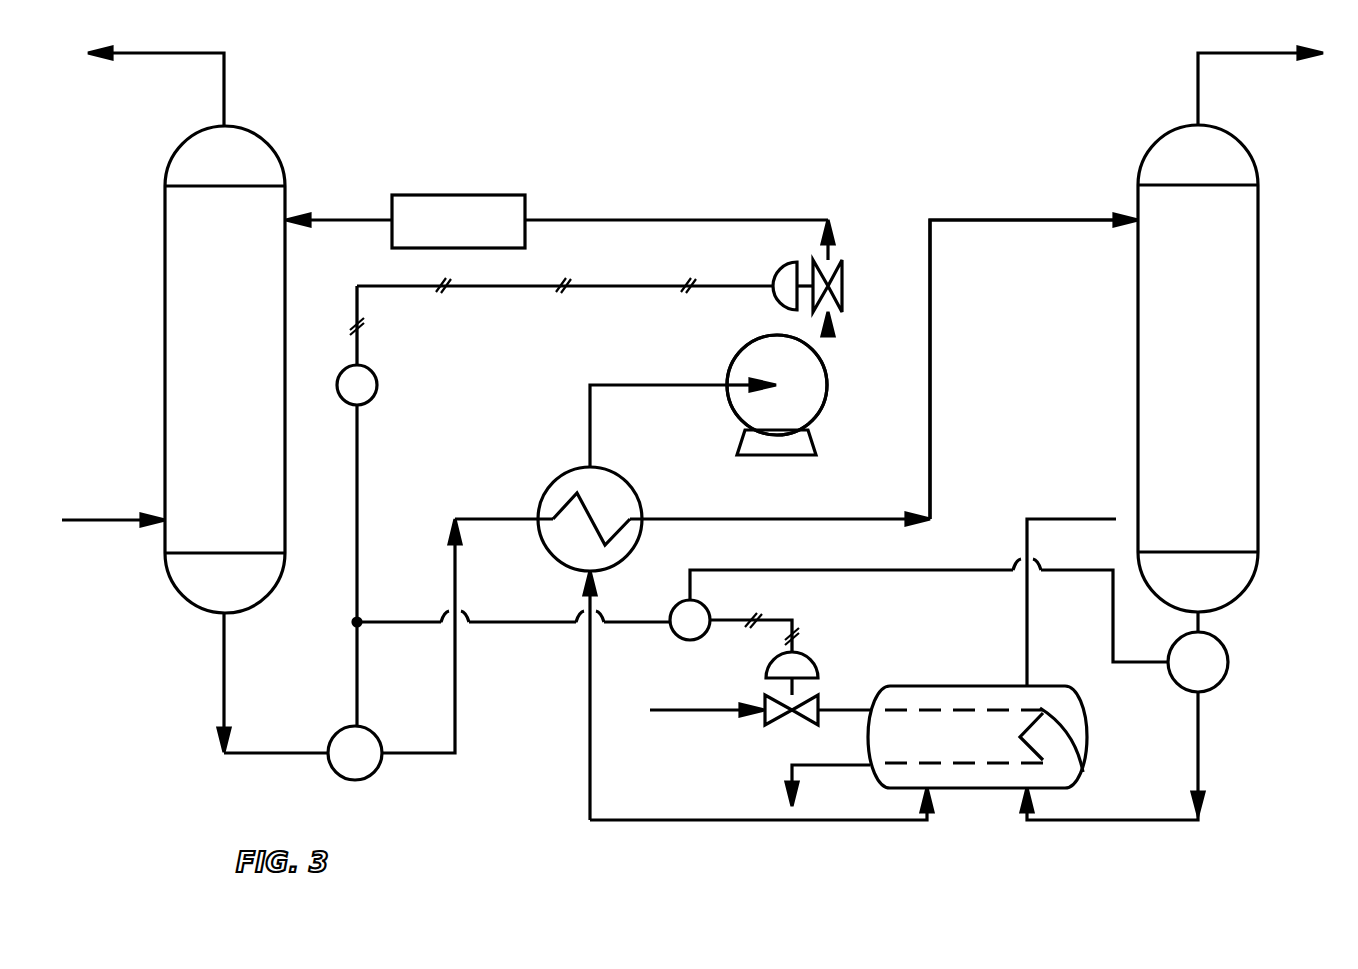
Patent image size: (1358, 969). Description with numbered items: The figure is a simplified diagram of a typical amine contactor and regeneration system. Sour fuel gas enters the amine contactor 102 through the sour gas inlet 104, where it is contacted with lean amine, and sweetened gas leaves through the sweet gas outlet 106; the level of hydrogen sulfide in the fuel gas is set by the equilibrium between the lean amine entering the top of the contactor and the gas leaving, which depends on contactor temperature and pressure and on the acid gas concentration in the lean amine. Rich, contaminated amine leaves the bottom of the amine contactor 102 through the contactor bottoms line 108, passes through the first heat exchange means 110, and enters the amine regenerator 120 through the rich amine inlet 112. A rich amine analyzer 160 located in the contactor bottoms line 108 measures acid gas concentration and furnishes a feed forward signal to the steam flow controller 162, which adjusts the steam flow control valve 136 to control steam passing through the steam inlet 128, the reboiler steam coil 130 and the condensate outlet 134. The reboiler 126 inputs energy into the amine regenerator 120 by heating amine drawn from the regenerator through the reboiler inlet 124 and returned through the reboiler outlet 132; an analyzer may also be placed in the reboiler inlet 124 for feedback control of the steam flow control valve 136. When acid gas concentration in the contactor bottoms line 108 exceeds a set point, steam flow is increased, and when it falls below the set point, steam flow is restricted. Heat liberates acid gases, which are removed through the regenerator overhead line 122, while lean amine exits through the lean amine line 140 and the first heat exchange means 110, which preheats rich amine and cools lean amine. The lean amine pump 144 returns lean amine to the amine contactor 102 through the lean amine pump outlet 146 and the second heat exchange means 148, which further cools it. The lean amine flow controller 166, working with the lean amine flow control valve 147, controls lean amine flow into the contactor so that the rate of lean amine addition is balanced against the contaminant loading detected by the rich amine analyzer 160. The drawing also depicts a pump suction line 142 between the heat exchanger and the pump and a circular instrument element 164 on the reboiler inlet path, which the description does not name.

The amine contactor 102 is at (165, 291).
The sour gas inlet 104 is at (125, 483).
The sweet gas outlet 106 is at (203, 53).
The contactor bottoms line 108 is at (224, 692).
The first heat exchange means 110 is at (556, 486).
The rich amine inlet 112 is at (1012, 216).
The amine regenerator 120 is at (1258, 268).
The regenerator overhead line 122 is at (1220, 53).
The reboiler inlet 124 is at (1202, 712).
The reboiler 126 is at (955, 686).
The steam inlet 128 is at (745, 685).
The reboiler steam coil 130 is at (1082, 768).
The reboiler outlet 132 is at (1053, 516).
The condensate outlet 134 is at (788, 770).
The steam flow control valve 136 is at (782, 720).
The lean amine line 140 is at (780, 820).
The pump suction line 142 is at (619, 385).
The lean amine pump 144 is at (742, 345).
The lean amine pump outlet 146 is at (830, 340).
The lean amine flow control valve 147 is at (843, 284).
The second heat exchange means 148 is at (477, 195).
The rich amine analyzer 160 is at (342, 730).
The steam flow controller 162 is at (683, 640).
The level sensor 164 is at (1226, 654).
The lean amine flow controller 166 is at (378, 383).